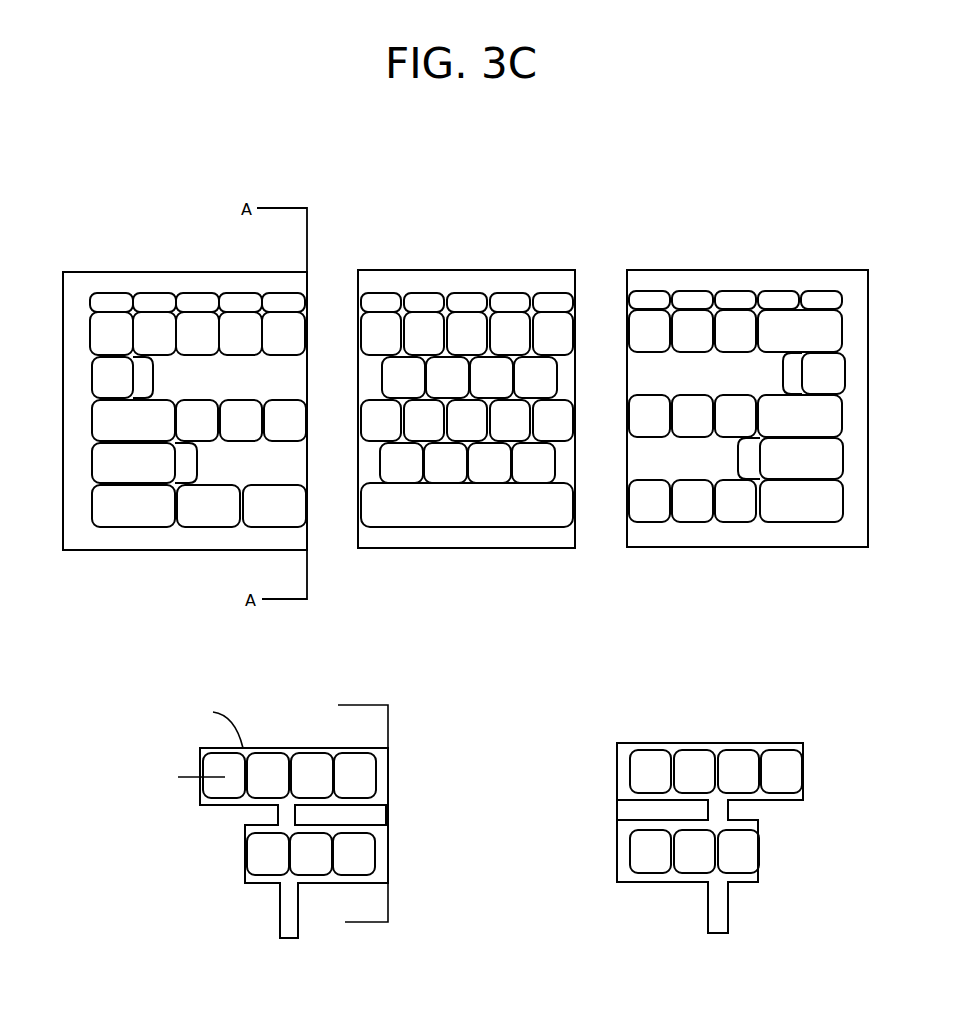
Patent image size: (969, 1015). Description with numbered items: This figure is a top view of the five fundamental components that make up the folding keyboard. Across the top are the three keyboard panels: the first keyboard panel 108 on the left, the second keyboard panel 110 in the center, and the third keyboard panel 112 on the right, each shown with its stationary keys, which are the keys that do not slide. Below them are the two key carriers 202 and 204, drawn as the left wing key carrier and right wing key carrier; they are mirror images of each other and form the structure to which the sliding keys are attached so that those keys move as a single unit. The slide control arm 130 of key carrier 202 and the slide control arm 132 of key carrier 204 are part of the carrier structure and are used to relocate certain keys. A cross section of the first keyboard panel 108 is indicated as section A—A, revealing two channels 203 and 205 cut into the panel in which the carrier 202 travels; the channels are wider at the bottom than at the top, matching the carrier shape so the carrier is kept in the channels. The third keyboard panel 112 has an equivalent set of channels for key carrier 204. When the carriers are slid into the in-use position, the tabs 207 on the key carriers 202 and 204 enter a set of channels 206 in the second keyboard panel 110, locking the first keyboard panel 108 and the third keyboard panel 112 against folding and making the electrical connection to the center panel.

The Keyboard Panel 1 108 is at (205, 270).
The Keyboard Panel 2 110 is at (438, 270).
The Keyboard Panel 3 112 is at (747, 270).
The channels 206 is at (357, 447).
The channel 203 is at (307, 375).
The channel 205 is at (312, 473).
The key carrier 202 is at (388, 735).
The key carrier 204 is at (803, 770).
The tabs 207 is at (388, 777).
The slide control arm 130 is at (280, 925).
The slide control arm 132 is at (708, 890).